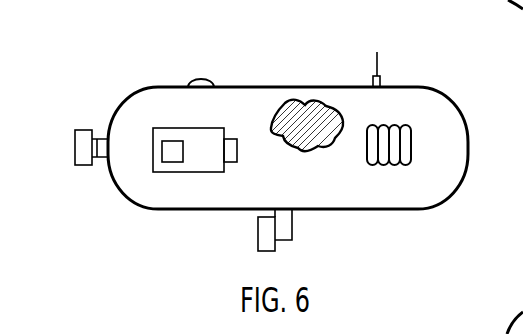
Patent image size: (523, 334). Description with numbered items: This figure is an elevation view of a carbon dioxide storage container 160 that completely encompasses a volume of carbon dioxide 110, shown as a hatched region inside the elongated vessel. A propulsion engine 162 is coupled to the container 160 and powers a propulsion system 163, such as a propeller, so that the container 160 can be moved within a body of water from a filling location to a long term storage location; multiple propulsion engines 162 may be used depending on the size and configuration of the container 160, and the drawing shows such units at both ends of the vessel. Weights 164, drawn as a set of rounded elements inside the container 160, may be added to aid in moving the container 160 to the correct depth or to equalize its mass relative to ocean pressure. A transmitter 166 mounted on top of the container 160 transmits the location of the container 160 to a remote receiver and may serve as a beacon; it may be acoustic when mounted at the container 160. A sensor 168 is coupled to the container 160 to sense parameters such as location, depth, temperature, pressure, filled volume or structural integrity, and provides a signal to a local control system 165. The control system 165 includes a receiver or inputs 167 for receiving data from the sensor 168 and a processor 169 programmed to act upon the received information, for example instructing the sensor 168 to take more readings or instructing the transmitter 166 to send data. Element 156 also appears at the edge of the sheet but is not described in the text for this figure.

The container 160 is at (140, 58).
The sensor 168 is at (203, 80).
The processor 169 is at (233, 138).
The carbon dioxide 110 is at (318, 115).
The transmitter 166 is at (381, 81).
The weights 164 is at (407, 158).
The control system 165 is at (197, 167).
The receiver or inputs 167 is at (168, 158).
The propulsion system 163 is at (81, 134).
The propulsion engine 162 is at (97, 153).
The adjacent component 156 is at (512, 13).